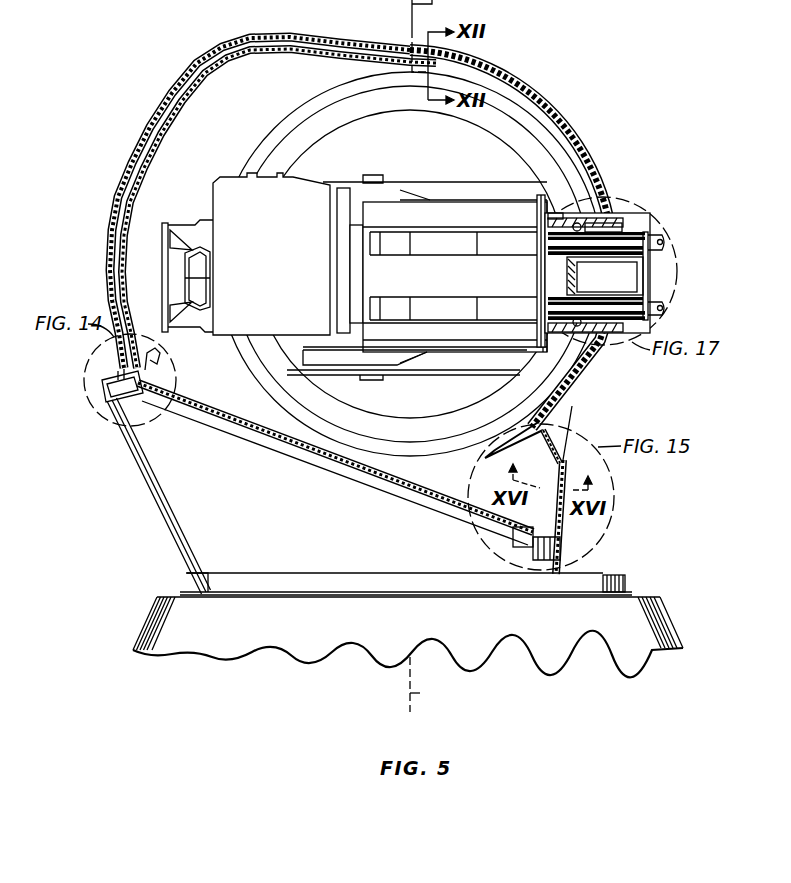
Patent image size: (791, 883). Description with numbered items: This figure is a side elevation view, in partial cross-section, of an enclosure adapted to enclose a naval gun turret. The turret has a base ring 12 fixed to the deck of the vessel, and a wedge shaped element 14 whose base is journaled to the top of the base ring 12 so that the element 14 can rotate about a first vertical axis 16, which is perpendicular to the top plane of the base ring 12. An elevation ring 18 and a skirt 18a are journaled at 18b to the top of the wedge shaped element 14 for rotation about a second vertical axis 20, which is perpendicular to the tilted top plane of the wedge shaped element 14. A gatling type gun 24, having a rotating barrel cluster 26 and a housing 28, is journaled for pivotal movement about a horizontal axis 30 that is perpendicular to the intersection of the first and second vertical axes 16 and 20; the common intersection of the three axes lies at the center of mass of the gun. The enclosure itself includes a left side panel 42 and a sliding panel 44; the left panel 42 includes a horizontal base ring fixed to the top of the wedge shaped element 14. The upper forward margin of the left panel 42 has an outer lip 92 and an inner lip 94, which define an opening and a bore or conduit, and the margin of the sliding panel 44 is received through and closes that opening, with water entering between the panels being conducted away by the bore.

The base ring 12 is at (660, 603).
The wedge shaped element 14 is at (160, 518).
The first vertical axis 16 is at (428, 356).
The elevation ring 18 is at (303, 109).
The skirt 18a is at (180, 397).
The journal 18b is at (124, 424).
The second vertical axis 20 is at (361, 353).
The gatling type gun 24 is at (650, 236).
The rotating barrel cluster 26 is at (630, 230).
The housing 28 is at (308, 180).
The horizontal axis 30 is at (417, 262).
The left side panel 42 is at (160, 100).
The sliding panel 44 is at (538, 99).
The outer lip 92 is at (258, 32).
The inner lip 94 is at (342, 43).